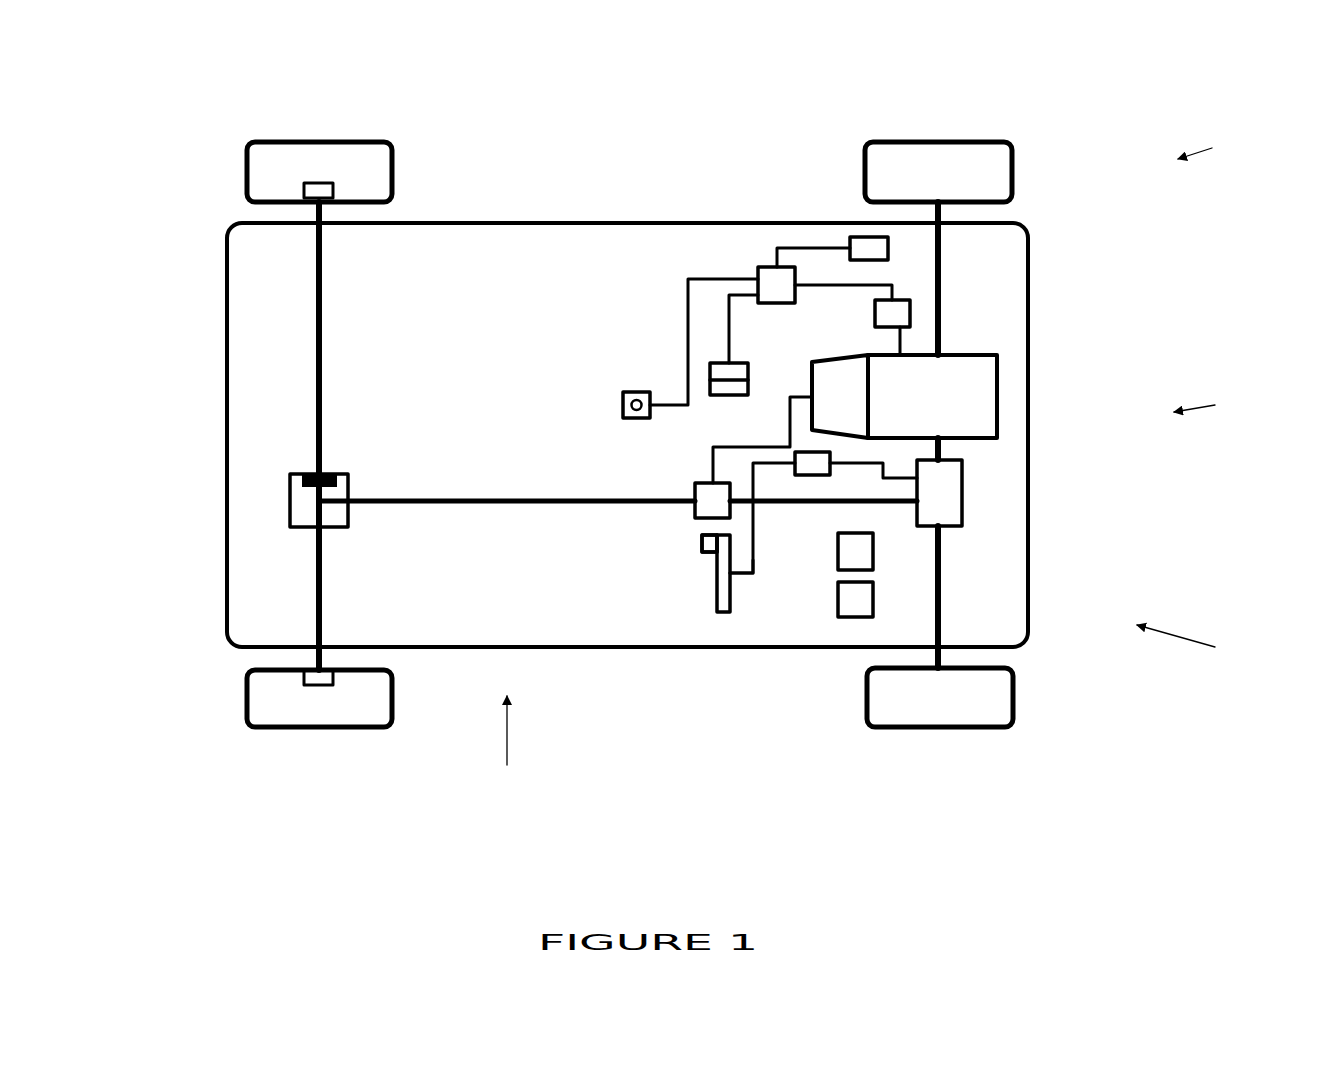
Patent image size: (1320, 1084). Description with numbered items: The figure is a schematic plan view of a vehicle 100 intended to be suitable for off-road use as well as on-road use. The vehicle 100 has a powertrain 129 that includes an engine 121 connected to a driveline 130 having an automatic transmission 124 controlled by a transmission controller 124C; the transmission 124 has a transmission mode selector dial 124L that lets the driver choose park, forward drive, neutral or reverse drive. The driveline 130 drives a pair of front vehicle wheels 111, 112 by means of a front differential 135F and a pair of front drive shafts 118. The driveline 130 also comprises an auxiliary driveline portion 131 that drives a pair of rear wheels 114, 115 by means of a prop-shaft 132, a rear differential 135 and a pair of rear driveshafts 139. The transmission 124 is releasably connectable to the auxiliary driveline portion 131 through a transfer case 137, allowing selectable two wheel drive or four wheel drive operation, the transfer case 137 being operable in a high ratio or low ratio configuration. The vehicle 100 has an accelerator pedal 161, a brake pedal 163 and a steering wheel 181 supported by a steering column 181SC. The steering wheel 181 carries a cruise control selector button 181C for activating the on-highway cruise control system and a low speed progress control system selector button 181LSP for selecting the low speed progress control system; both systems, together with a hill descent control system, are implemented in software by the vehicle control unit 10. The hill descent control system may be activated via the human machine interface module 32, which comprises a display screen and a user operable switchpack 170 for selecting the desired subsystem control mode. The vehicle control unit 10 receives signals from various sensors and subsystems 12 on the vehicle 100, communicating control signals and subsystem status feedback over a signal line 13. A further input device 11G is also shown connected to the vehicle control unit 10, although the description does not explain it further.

The vehicle 100 is at (1217, 143).
The vehicle control unit 10 is at (770, 273).
The gear selector / input device 11G is at (622, 405).
The vehicle subsystems 12 is at (868, 253).
The signal line 13 is at (831, 247).
The front vehicle wheel 111 is at (990, 165).
The front vehicle wheel 112 is at (990, 703).
The rear wheel 114 is at (290, 165).
The rear wheel 115 is at (275, 703).
The front drive shafts 118 is at (941, 268).
The engine 121 is at (967, 383).
The automatic transmission 124 is at (832, 373).
The transmission controller 124C is at (902, 315).
The transmission mode selector dial 124L is at (823, 458).
The powertrain 129 is at (1217, 404).
The driveline 130 is at (1196, 644).
The auxiliary driveline portion 131 is at (507, 747).
The prop-shaft 132 is at (452, 503).
The rear differential 135 is at (290, 505).
The front differential 135F is at (953, 485).
The transfer case 137 is at (695, 513).
The rear driveshafts 139 is at (318, 295).
The accelerator pedal 161 is at (855, 607).
The brake pedal 163 is at (848, 552).
The switchpack 170 is at (670, 263).
The human machine interface module 32 is at (710, 363).
The steering wheel 181 is at (723, 610).
The cruise control selector button 181C is at (710, 550).
The low speed progress control system selector button 181LSP is at (702, 545).
The steering column 181SC is at (742, 574).